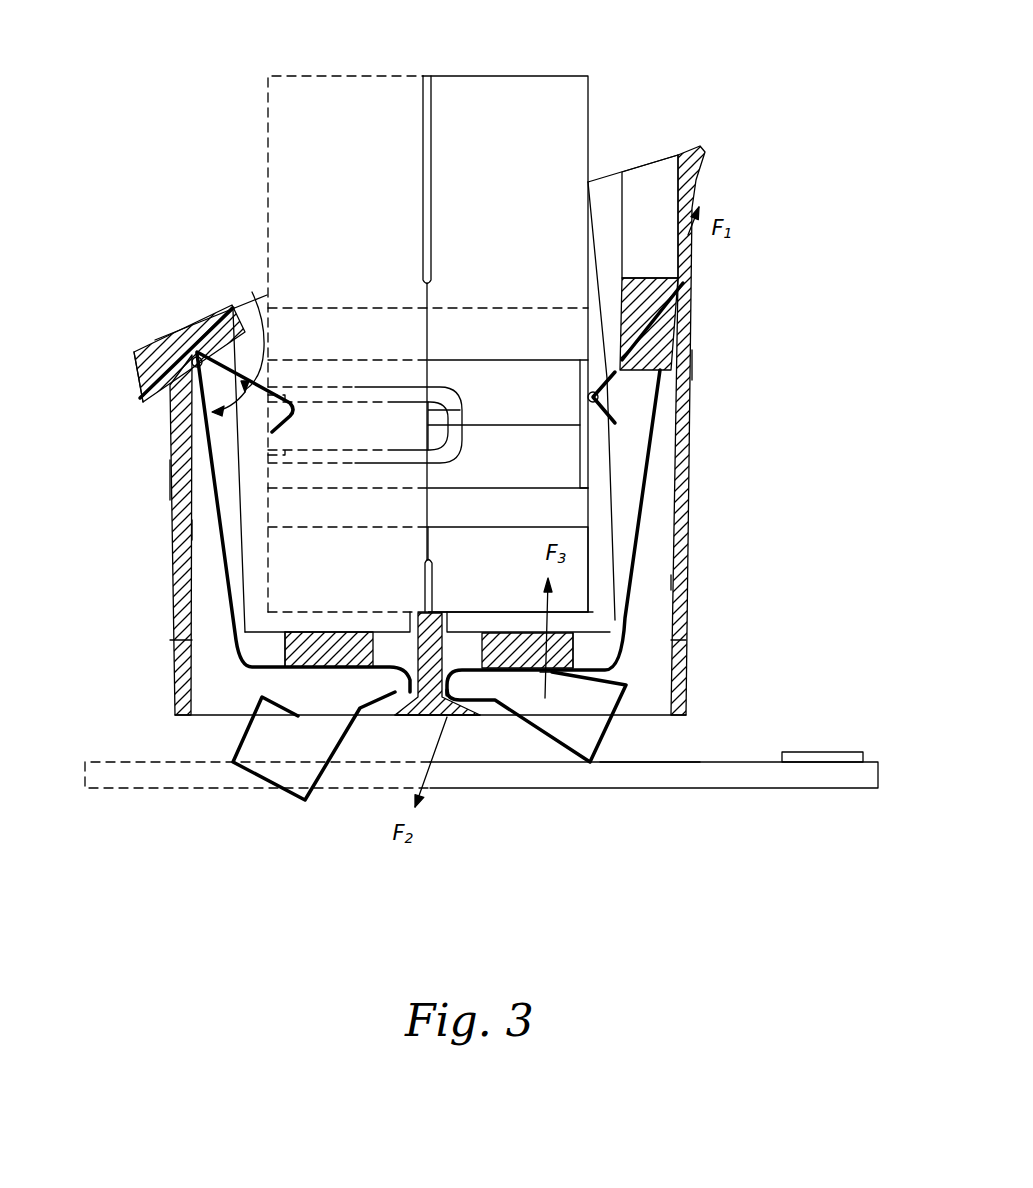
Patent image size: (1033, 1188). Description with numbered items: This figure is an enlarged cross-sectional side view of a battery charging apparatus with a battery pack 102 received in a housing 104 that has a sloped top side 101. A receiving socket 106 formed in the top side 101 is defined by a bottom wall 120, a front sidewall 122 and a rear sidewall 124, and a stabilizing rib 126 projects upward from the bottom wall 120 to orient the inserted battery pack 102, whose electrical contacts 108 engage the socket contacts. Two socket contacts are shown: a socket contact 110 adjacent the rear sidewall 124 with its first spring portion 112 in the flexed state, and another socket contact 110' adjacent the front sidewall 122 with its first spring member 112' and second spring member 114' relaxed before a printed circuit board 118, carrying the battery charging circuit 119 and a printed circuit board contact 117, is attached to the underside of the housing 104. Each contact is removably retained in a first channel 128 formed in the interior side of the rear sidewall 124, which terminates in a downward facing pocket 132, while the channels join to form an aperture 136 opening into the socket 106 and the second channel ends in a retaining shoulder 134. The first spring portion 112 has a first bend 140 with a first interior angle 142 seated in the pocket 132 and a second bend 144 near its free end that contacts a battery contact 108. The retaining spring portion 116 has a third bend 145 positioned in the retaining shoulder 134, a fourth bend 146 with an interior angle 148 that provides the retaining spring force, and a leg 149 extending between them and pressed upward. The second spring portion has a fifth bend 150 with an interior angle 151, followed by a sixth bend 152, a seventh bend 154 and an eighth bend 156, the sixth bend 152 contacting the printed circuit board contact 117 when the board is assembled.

The sloped top side 101 is at (647, 160).
The battery pack 102 is at (573, 100).
The housing 104 is at (170, 340).
The receiving socket 106 is at (267, 293).
The electrical contacts 108 is at (588, 450).
The socket contact 110 is at (619, 532).
The socket contact 110' is at (239, 523).
The first spring portion 112 is at (567, 370).
The first spring member 112' is at (242, 345).
The second spring member 114' is at (417, 767).
The retaining spring portion 116 is at (380, 620).
The printed circuit board contact 117 is at (660, 765).
The printed circuit board 118 is at (115, 790).
The battery charging circuit 119 is at (840, 752).
The bottom wall 120 is at (345, 620).
The front sidewall 122 is at (170, 468).
The rear sidewall 124 is at (605, 297).
The stabilizing rib 126 is at (455, 600).
The first channel 128 is at (170, 527).
The pocket 132 is at (190, 345).
The retaining shoulder 134 is at (430, 718).
The aperture 136 is at (190, 640).
The first bend 140 is at (140, 375).
The first interior angle 142 is at (222, 418).
The second bend 144 is at (590, 397).
The third bend 145 is at (400, 620).
The fourth bend 146 is at (240, 660).
The interior angle 148 is at (580, 640).
The leg 149 is at (285, 672).
The fifth bend 150 is at (400, 672).
The interior angle 151 is at (358, 724).
The sixth bend 152 is at (310, 800).
The seventh bend 154 is at (235, 790).
The eighth bend 156 is at (260, 720).